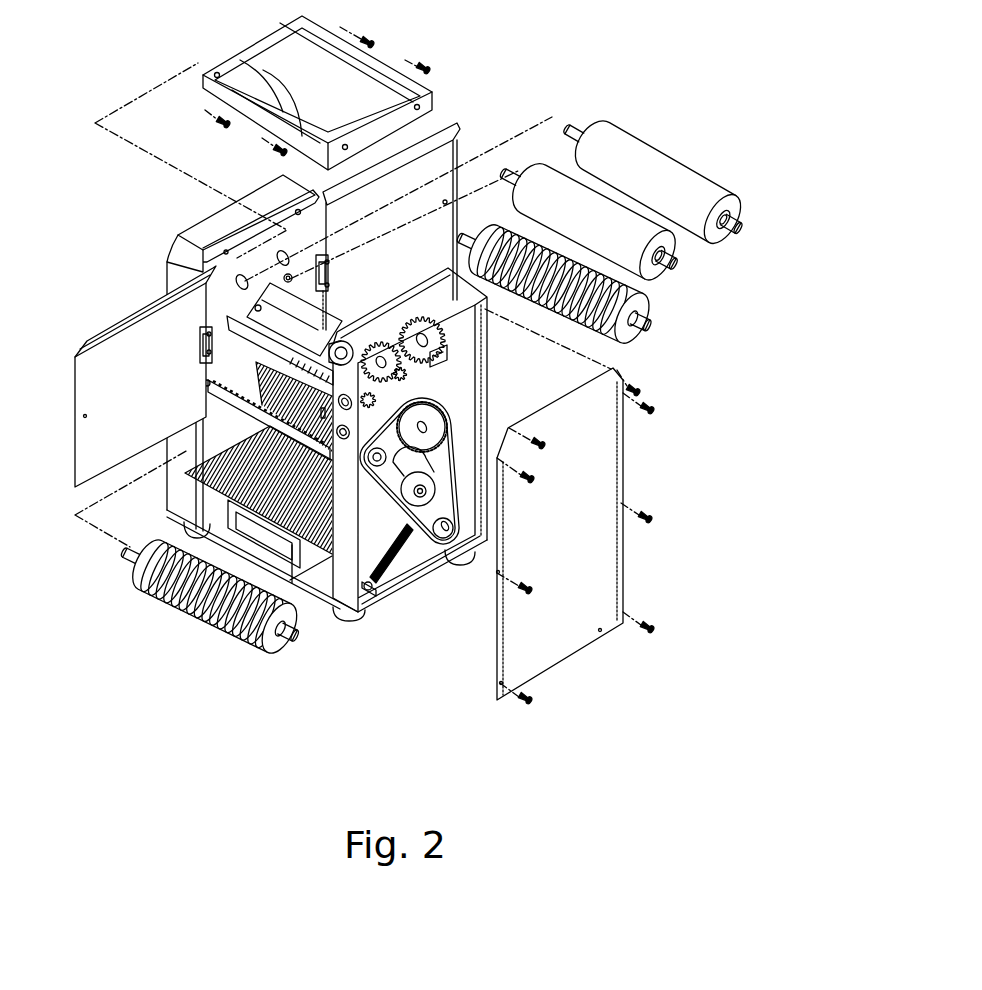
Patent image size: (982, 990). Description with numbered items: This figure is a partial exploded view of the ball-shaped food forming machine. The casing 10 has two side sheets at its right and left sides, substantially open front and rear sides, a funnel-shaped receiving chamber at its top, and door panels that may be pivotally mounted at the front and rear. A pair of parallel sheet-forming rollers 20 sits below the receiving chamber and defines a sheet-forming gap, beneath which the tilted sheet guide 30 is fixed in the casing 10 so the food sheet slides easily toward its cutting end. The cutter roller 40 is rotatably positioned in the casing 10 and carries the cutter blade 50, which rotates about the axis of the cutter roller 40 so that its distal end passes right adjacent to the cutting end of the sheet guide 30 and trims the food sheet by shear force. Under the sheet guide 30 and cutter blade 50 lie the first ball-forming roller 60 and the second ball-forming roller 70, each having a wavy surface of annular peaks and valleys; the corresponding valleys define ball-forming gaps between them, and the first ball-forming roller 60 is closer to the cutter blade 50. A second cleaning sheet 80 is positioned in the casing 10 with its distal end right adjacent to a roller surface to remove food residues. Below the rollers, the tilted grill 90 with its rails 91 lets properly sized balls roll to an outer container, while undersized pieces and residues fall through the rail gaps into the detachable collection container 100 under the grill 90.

The casing 10 is at (171, 283).
The sheet-forming rollers 20 is at (593, 200).
The sheet guide 30 is at (288, 307).
The cutter roller 40 is at (243, 310).
The cutter blade 50 is at (207, 277).
The first ball-forming roller 60 is at (208, 627).
The second ball-forming roller 70 is at (625, 289).
The second cleaning sheet 80 is at (192, 478).
The grill 90 is at (318, 568).
The rails 91 is at (362, 577).
The collection container 100 is at (245, 623).